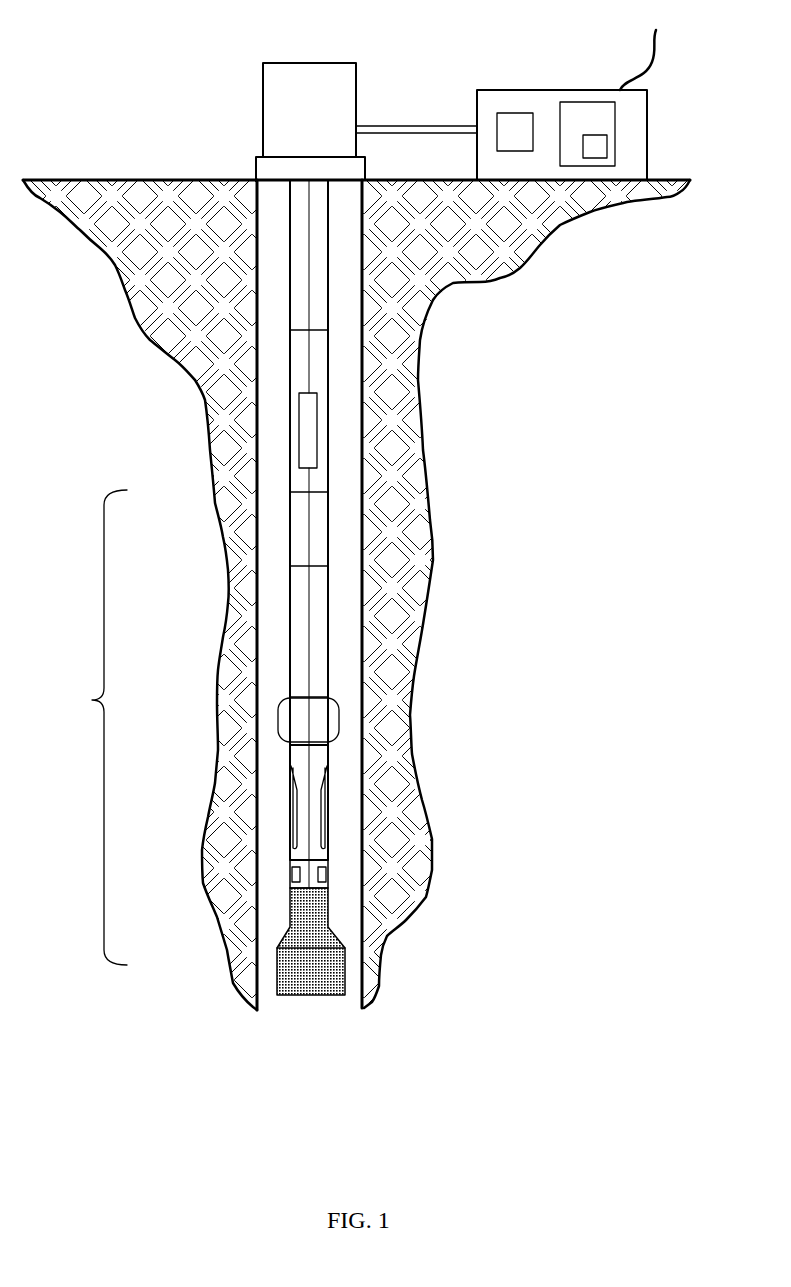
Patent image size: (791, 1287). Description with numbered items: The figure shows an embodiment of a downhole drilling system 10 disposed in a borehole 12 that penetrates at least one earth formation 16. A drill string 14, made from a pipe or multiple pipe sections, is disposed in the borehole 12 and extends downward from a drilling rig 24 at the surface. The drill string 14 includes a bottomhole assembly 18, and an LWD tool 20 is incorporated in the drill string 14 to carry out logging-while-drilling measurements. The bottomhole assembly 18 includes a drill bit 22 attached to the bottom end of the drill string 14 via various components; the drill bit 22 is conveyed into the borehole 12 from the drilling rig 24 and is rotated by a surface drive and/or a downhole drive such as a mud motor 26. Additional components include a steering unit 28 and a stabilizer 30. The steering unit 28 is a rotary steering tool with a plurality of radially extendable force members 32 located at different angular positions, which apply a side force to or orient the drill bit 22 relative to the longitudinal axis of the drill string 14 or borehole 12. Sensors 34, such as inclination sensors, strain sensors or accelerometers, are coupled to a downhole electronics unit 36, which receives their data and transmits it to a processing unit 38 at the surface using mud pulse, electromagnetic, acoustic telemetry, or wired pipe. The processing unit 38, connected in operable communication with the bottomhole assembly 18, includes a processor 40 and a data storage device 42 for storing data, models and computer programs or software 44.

The downhole drilling system 10 is at (131, 67).
The borehole 12 is at (355, 470).
The drill string 14 is at (320, 303).
The earth formation 16 is at (175, 298).
The bottomhole assembly 18 is at (89, 727).
The LWD tool 20 is at (298, 532).
The drill bit 22 is at (338, 975).
The drilling rig 24 is at (287, 88).
The mud motor 26 is at (318, 650).
The steering unit 28 is at (330, 802).
The stabilizer 30 is at (320, 720).
The radially extendable force members 32 is at (317, 808).
The sensors 34 is at (330, 873).
The downhole electronics unit 36 is at (313, 413).
The processing unit 38 is at (590, 91).
The processor 40 is at (517, 118).
The data storage device 42 is at (628, 106).
The computer programs or software 44 is at (600, 153).